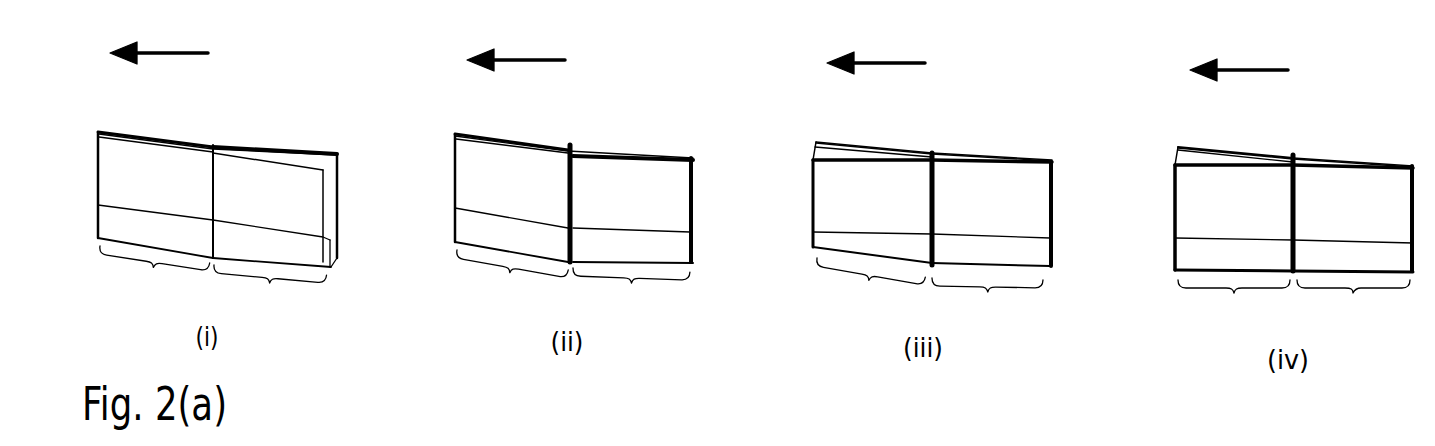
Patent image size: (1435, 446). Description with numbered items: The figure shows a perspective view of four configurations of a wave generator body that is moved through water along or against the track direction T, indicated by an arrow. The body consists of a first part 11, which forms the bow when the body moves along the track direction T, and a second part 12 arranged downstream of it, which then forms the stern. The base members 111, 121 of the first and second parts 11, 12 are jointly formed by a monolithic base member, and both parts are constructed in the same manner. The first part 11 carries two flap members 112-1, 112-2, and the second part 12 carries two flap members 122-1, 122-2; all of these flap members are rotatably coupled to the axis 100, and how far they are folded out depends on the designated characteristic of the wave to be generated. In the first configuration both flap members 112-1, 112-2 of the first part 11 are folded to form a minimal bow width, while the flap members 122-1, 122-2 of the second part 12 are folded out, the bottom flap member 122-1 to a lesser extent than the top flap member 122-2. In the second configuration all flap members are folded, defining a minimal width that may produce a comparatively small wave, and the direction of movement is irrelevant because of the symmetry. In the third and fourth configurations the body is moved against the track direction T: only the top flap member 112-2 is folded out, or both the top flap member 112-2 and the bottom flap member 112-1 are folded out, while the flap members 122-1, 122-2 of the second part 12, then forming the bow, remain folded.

The axis 100 is at (215, 148).
The first part 11 is at (694, 220).
The second part 12 is at (823, 229).
The bottom flap member 112-1 is at (119, 230).
The top flap member 112-2 is at (139, 163).
The bottom flap member 122-1 is at (293, 248).
The top flap member 122-2 is at (300, 192).
The base member 111 is at (265, 145).
The base member 121 is at (756, 113).
The track direction T is at (699, 54).